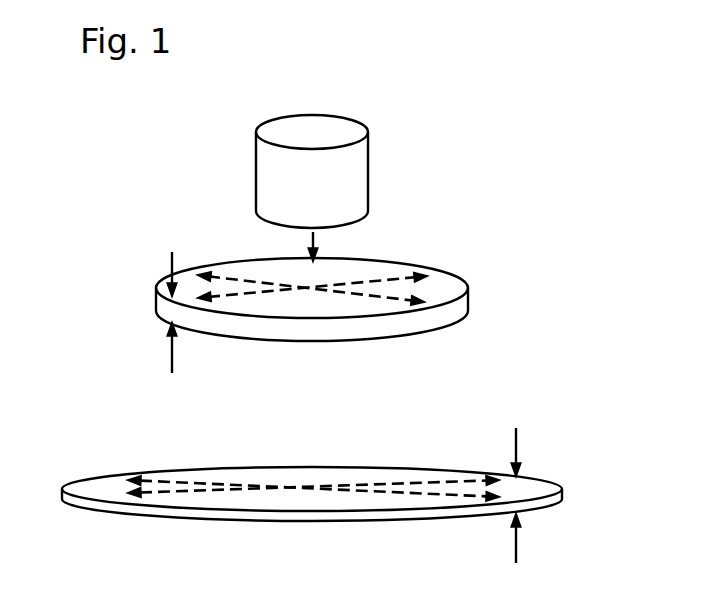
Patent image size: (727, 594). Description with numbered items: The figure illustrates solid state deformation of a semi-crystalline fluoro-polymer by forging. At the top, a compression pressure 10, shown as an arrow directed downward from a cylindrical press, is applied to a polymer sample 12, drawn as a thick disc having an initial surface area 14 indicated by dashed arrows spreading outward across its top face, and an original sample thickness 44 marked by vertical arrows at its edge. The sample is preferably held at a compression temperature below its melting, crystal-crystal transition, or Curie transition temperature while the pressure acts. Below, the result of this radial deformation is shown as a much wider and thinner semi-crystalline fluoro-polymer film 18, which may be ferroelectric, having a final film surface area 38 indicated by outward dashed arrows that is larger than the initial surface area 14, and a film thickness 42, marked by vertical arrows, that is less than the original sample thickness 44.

The compression pressure 10 is at (318, 246).
The polymer sample 12 is at (468, 286).
The initial surface area 14 is at (433, 282).
The semi-crystalline fluoro-polymer film 18 is at (543, 490).
The final film surface area 38 is at (443, 490).
The film thickness 42 is at (518, 438).
The original sample thickness 44 is at (172, 348).